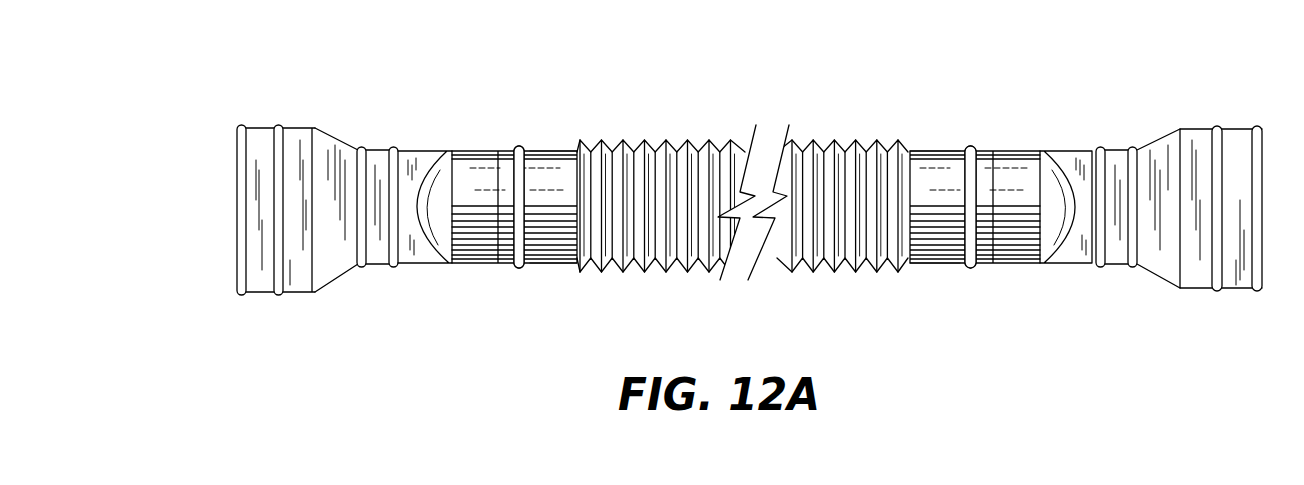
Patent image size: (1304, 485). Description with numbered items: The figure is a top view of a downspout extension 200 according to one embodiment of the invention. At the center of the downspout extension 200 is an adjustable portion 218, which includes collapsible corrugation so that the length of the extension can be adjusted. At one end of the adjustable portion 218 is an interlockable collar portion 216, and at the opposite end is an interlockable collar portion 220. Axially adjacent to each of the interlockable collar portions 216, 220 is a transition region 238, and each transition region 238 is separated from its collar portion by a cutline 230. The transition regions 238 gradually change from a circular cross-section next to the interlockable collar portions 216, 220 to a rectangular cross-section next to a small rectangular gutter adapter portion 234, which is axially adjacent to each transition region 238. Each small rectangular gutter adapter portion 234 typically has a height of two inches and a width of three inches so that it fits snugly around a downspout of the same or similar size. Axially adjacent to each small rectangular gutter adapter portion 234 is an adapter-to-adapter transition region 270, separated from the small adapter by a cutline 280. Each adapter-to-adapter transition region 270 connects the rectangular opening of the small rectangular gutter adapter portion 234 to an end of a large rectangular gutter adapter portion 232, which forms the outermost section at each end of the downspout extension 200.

The downspout extension 200 is at (1133, 390).
The interlockable collar portion 216 is at (509, 317).
The adjustable portion 218 is at (588, 102).
The interlockable collar portion 220 is at (915, 317).
The cutline 230 is at (500, 151).
The large rectangular gutter adapter portion 232 is at (237, 317).
The small rectangular gutter adapter portion 234 is at (362, 317).
The transition region 238 is at (443, 317).
The adapter-to-adapter transition region 270 is at (316, 317).
The cutline 280 is at (360, 149).